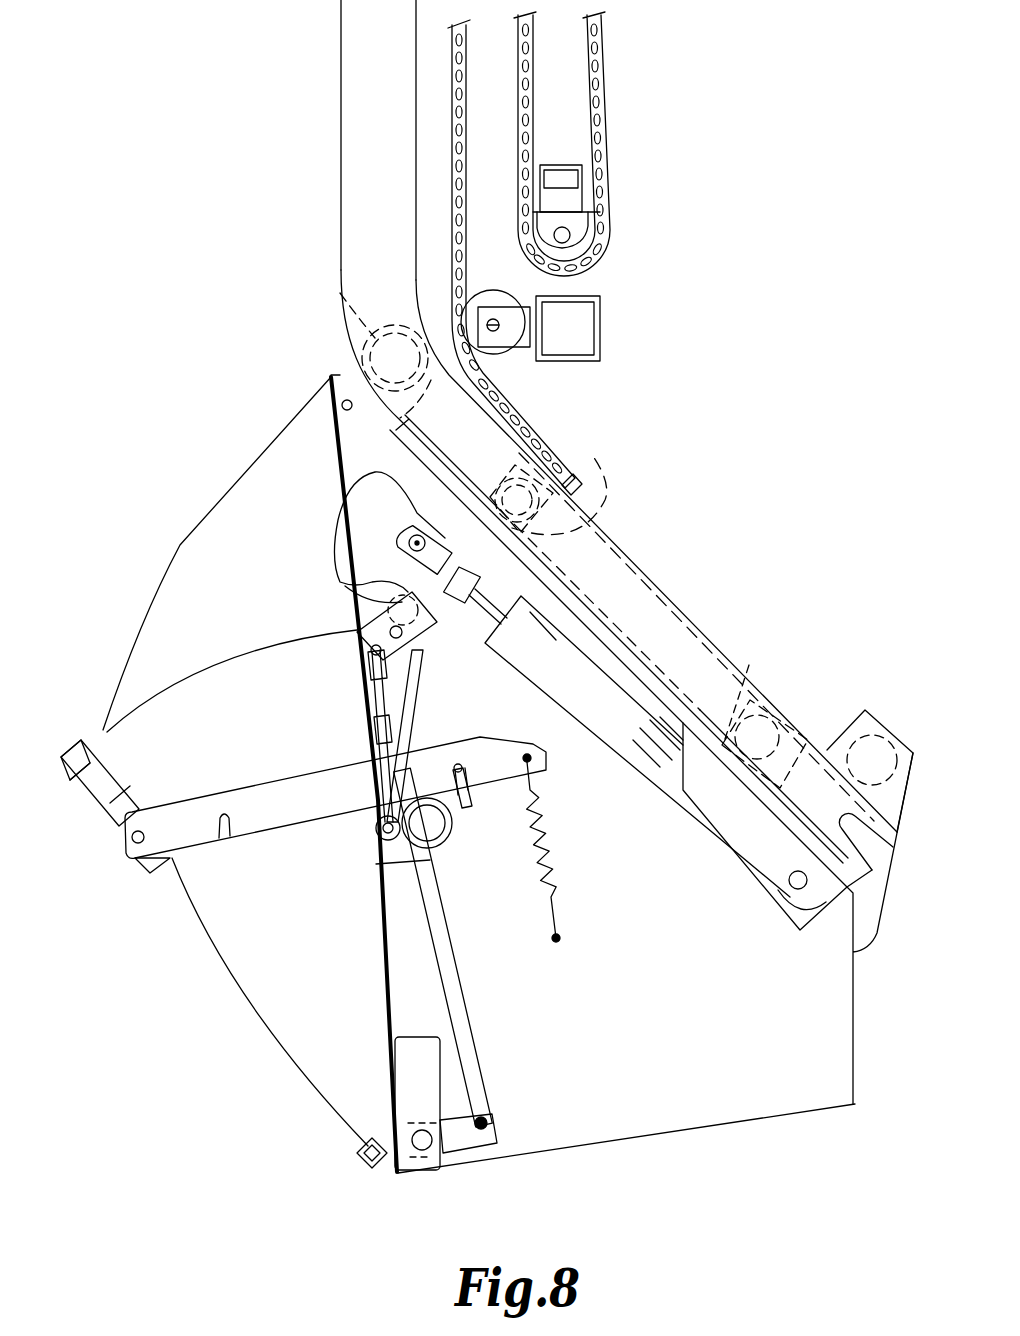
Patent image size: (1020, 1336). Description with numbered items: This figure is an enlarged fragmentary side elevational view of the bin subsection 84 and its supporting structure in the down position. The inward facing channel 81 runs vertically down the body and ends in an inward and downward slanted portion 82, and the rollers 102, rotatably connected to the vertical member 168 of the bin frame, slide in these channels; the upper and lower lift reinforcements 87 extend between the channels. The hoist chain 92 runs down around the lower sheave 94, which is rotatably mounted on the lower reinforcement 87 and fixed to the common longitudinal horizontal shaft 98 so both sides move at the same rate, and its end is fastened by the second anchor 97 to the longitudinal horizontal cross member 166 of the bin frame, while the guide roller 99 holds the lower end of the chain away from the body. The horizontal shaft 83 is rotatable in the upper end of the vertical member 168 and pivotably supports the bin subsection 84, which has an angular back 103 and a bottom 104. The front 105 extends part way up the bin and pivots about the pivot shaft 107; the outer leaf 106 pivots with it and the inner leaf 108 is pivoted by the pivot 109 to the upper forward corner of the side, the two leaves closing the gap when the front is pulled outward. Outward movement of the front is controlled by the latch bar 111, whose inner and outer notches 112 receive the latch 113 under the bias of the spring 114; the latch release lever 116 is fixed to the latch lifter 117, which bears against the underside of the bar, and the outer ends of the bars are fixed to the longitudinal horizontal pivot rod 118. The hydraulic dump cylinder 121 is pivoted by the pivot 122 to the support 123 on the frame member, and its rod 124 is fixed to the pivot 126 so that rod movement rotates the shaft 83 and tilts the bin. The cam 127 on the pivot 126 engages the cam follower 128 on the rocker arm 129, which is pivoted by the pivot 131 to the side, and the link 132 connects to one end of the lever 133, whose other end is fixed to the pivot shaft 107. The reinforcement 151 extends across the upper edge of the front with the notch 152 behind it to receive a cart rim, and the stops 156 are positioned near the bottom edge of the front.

The inward facing channel 81 is at (339, 180).
The inward/downward slanted portion 82 is at (690, 612).
The horizontal shaft 83 is at (355, 320).
The bin subsection 84 is at (216, 496).
The longitudinal lift reinforcement 87 is at (602, 332).
The chain 92 is at (604, 134).
The lower sheave 94 is at (592, 228).
The second anchor 97 is at (580, 490).
The longitudinal horizontal shaft 98 is at (570, 241).
The guide roller 99 is at (505, 350).
The roller 102 is at (540, 472).
The angular back 103 is at (857, 1057).
The bottom 104 is at (680, 1128).
The front 105 is at (284, 1014).
The outer leaf 106 is at (314, 942).
The pivot shaft 107 is at (745, 665).
The inner leaf 108 is at (251, 578).
The pivot 109 is at (332, 392).
The latch bar 111 is at (284, 782).
The notch 112 is at (228, 838).
The latch 113 is at (472, 828).
The spring 114 is at (549, 858).
The latch release lever 116 is at (440, 698).
The latch lifter 117 is at (452, 842).
The longitudinal horizontal pivot rod 118 is at (128, 846).
The hydraulic dump cylinder 121 is at (608, 717).
The pivot 122 is at (791, 890).
The support 123 is at (735, 830).
The rod 124 is at (490, 580).
The pivot 126 is at (438, 531).
The cam 127 is at (338, 525).
The cam follower 128 is at (345, 586).
The rocker arm 129 is at (427, 624).
The pivot 131 is at (357, 632).
The link 132 is at (456, 970).
The lever 133 is at (473, 1152).
The reinforcement 151 is at (78, 742).
The notch 152 is at (103, 735).
The stop 156 is at (358, 1160).
The longitudinal horizontal cross member 166 is at (600, 518).
The vertical member 168 is at (642, 560).